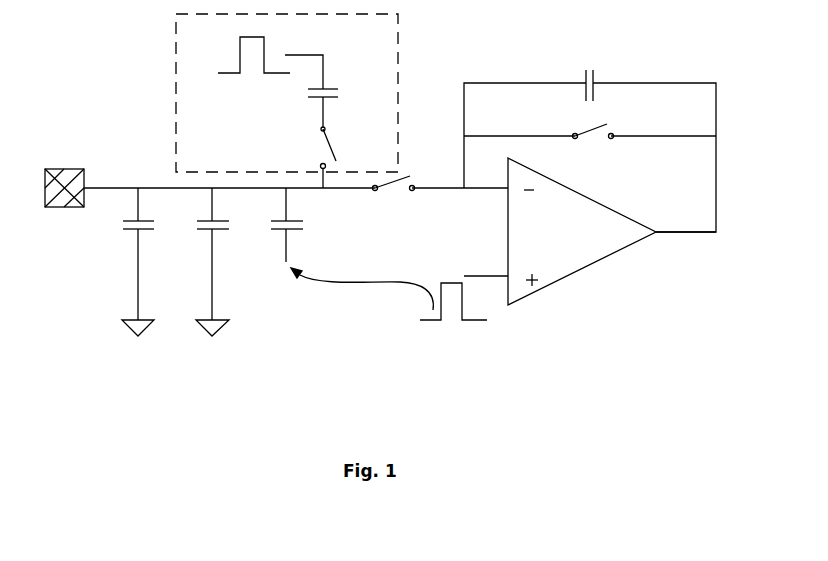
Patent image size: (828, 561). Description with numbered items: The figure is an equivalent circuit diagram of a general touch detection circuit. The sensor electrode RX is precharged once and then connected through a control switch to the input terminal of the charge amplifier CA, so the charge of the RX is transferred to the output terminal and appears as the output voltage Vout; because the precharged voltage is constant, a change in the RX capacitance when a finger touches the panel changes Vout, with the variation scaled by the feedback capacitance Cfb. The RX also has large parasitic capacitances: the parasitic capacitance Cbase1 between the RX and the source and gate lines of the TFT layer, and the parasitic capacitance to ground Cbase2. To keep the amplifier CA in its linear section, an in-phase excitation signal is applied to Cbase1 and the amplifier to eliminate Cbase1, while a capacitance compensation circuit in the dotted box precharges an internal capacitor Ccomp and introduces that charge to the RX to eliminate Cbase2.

The sensor electrode RX is at (64, 180).
The parasitic capacitance to ground Cbase2 is at (233, 262).
The parasitic capacitance Cbase1 is at (311, 225).
The internal capacitor Ccomp is at (287, 101).
The feedback capacitance Cfb is at (590, 140).
The charge amplifier CA is at (582, 231).
The output voltage Vout is at (686, 222).
The excitation signal excitation is at (537, 304).